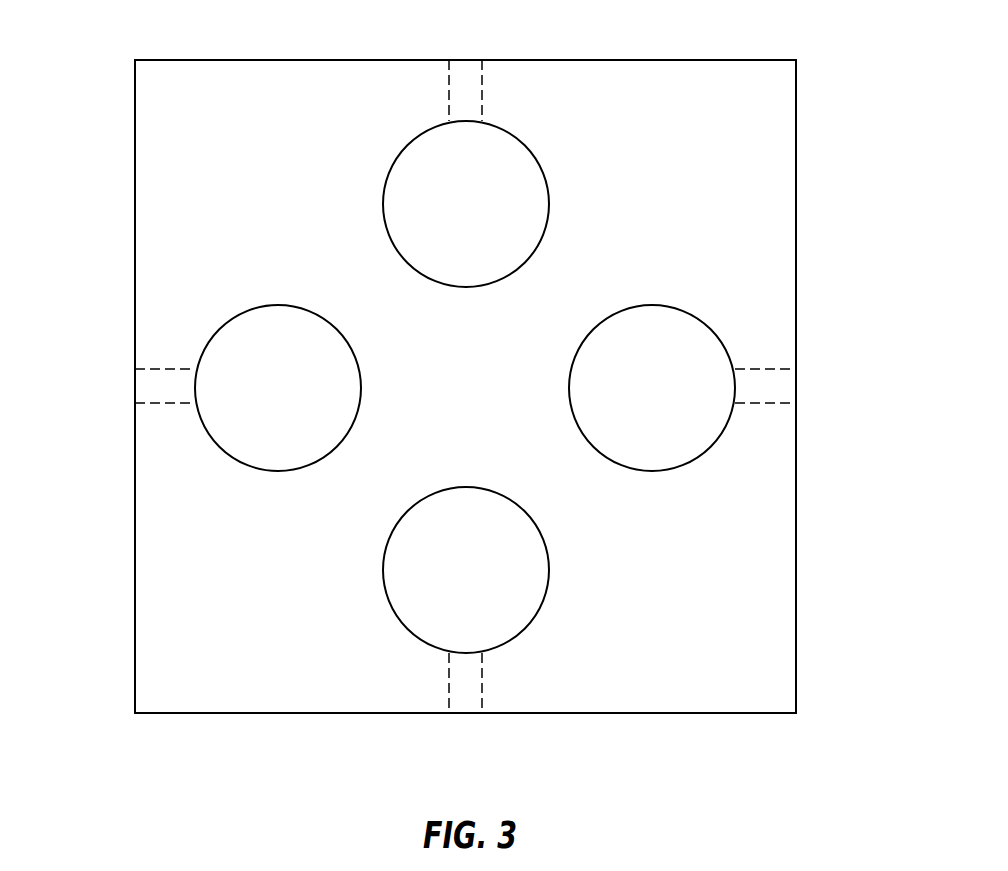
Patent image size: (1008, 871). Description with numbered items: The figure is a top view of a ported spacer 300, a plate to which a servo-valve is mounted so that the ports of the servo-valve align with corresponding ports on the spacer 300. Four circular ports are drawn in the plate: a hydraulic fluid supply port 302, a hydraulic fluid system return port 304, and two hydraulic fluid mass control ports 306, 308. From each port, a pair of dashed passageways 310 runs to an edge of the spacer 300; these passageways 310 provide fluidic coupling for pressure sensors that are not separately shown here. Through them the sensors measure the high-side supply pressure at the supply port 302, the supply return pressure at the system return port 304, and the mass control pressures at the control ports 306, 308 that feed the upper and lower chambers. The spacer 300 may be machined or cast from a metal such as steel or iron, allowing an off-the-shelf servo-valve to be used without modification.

The ported spacer 300 is at (235, 60).
The hydraulic fluid supply port 302 is at (425, 632).
The hydraulic fluid system return port 304 is at (505, 143).
The hydraulic fluid mass control port 306 is at (212, 445).
The hydraulic fluid mass control port 308 is at (717, 443).
The passageways 310 is at (466, 60).